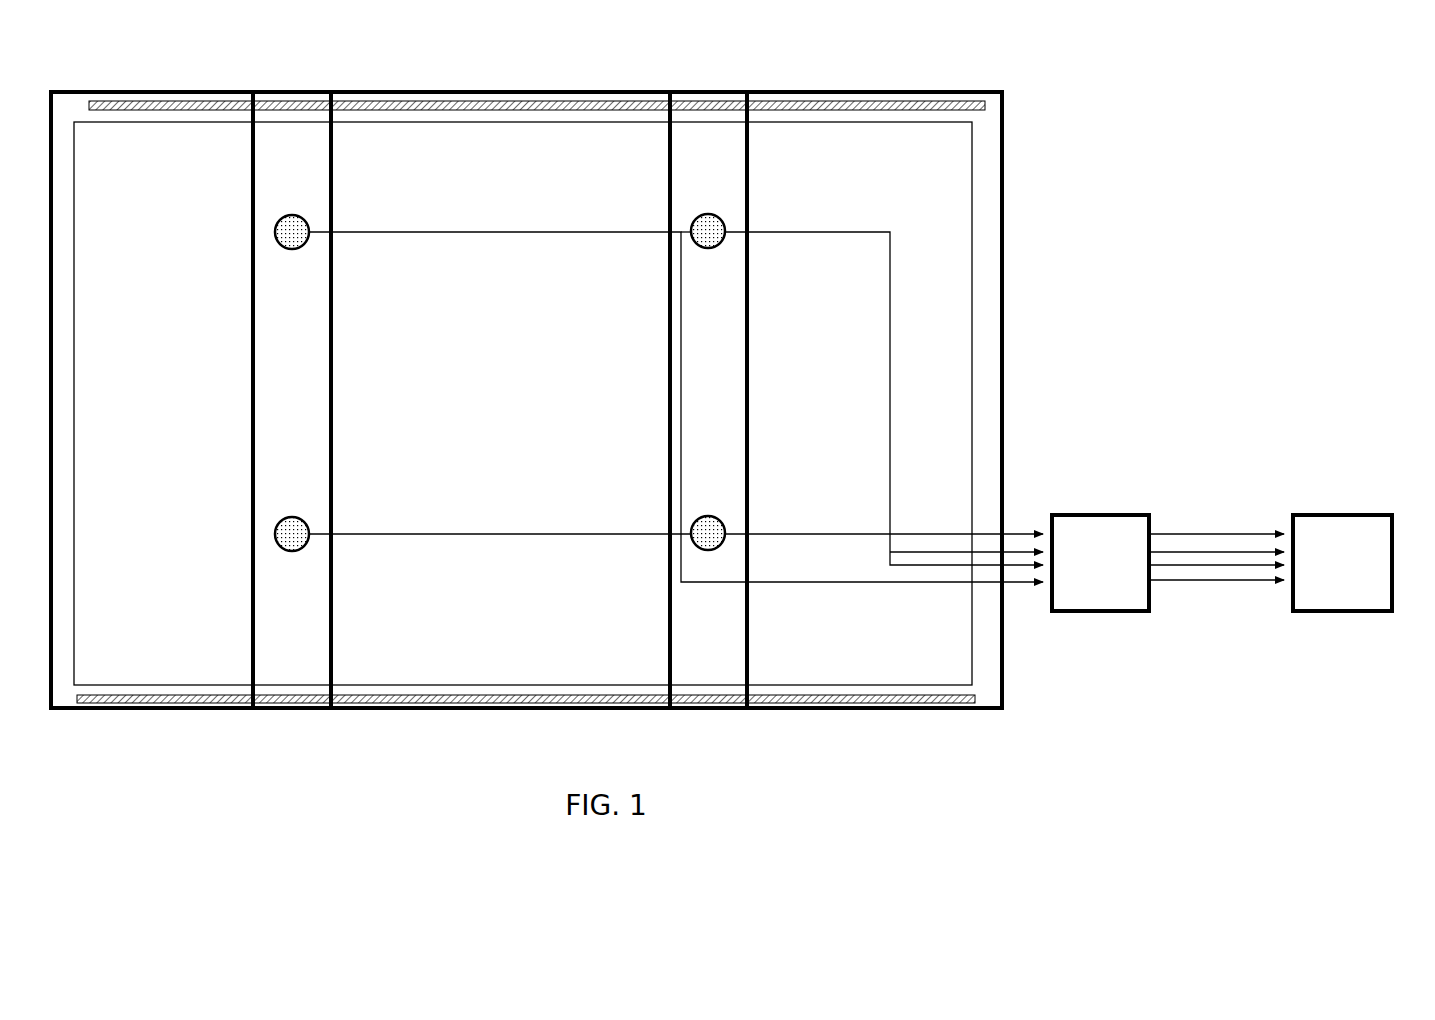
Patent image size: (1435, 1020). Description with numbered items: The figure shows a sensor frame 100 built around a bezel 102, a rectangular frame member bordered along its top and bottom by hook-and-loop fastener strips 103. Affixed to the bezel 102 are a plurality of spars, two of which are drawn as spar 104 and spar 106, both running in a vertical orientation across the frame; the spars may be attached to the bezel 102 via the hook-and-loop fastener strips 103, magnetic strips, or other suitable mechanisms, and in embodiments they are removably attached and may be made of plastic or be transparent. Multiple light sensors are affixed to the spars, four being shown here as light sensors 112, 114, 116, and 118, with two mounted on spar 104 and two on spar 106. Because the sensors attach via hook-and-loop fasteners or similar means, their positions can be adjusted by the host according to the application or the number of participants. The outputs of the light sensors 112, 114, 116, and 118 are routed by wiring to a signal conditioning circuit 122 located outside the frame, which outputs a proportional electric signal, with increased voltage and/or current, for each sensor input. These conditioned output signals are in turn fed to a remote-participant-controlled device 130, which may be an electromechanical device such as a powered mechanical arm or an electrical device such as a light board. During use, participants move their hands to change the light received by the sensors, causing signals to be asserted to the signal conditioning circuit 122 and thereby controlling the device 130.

The sensor frame 100 is at (1092, 157).
The bezel 102 is at (818, 92).
The hook-and-loop fastener strips 103 is at (940, 103).
The spar 104 is at (317, 176).
The spar 106 is at (730, 170).
The light sensor 112 is at (285, 215).
The light sensor 114 is at (285, 517).
The light sensor 116 is at (703, 215).
The light sensor 118 is at (710, 528).
The signal conditioning circuit 122 is at (1090, 537).
The remote-participant-controlled device 130 is at (1343, 537).